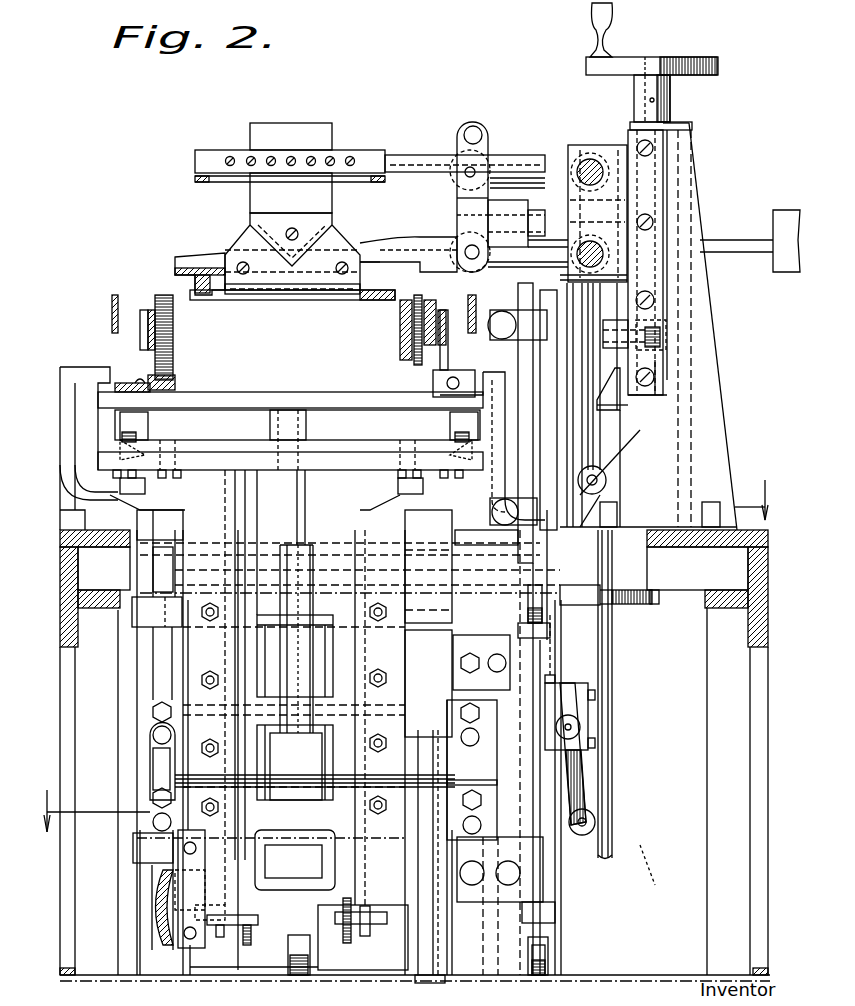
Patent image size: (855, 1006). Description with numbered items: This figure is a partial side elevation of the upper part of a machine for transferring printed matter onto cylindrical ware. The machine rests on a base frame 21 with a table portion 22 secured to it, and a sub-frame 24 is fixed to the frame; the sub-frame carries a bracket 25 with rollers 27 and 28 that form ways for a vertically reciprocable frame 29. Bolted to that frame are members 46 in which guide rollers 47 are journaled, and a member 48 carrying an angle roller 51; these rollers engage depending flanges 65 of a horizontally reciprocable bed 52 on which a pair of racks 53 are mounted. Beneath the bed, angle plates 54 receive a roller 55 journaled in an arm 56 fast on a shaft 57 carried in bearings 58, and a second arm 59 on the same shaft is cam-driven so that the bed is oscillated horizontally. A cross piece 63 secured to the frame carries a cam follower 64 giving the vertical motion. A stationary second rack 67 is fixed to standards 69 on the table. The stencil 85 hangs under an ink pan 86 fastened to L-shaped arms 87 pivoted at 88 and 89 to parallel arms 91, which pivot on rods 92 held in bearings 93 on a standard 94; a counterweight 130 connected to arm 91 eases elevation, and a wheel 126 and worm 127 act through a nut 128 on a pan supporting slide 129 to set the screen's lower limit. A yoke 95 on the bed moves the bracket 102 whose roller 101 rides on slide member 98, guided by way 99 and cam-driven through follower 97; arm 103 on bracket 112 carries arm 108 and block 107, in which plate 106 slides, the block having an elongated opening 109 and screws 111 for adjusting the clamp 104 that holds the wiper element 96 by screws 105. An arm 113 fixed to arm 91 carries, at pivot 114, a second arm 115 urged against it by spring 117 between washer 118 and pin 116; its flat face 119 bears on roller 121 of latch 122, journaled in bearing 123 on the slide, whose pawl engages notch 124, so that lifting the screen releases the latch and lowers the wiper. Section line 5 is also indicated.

The section line 5 is at (407, 656).
The base frame 21 is at (648, 912).
The table portion 22 is at (62, 535).
The sub-frame 24 is at (148, 680).
The bracket 25 is at (170, 512).
The roller 27 is at (212, 928).
The roller 28 is at (152, 887).
The vertically reciprocable frame 29 is at (403, 694).
The members 46 is at (290, 444).
The guide rollers 47 is at (152, 420).
The member 48 is at (138, 485).
The angle rollers 51 is at (118, 442).
The bed 52 is at (268, 393).
The racks 53 is at (150, 362).
The angle plates 54 is at (305, 424).
The roller 55 is at (272, 478).
The arm 56 is at (308, 512).
The shaft 57 is at (355, 775).
The bearings 58 is at (150, 768).
The second arm 59 is at (433, 965).
The cross piece 63 is at (313, 912).
The cam follower 64 is at (300, 977).
The depending flanges 65 is at (100, 412).
The second rack 67 is at (145, 338).
The standards 69 is at (62, 468).
The stencil 85 is at (340, 297).
The ink pan 86 is at (196, 298).
The L-shaped arms 87 is at (395, 243).
The pivot 88 is at (470, 258).
The pivot 89 is at (482, 172).
The parallel arms 91 is at (545, 245).
The rods 92 is at (590, 160).
The bearings 93 is at (632, 146).
The standard 94 is at (692, 190).
The yoke 95 is at (490, 347).
The wiper element 96 is at (300, 294).
The follower 97 is at (552, 952).
The slide member 98 is at (560, 892).
The way 99 is at (543, 855).
The roller 101 is at (540, 612).
The bracket 102 is at (548, 308).
The arm 103 is at (478, 138).
The clamp 104 is at (340, 250).
The screws 105 is at (363, 262).
The plate 106 is at (252, 196).
The block 107 is at (388, 150).
The arm 108 is at (400, 165).
The elongated opening 109 is at (200, 178).
The screws 111 is at (350, 156).
The bracket 112 is at (480, 200).
The arm 113 is at (594, 425).
The pivot 114 is at (596, 470).
The second arm 115 is at (612, 712).
The pin 116 is at (648, 612).
The spring 117 is at (628, 605).
The washer 118 is at (652, 600).
The flat face 119 is at (600, 842).
The roller 121 is at (605, 818).
The latch 122 is at (580, 778).
The bearing 123 is at (588, 690).
The notch 124 is at (552, 683).
The wheel 126 is at (720, 66).
The worm 127 is at (660, 313).
The nut 128 is at (668, 336).
The pan supporting slide 129 is at (660, 367).
The counterweight 130 is at (785, 210).